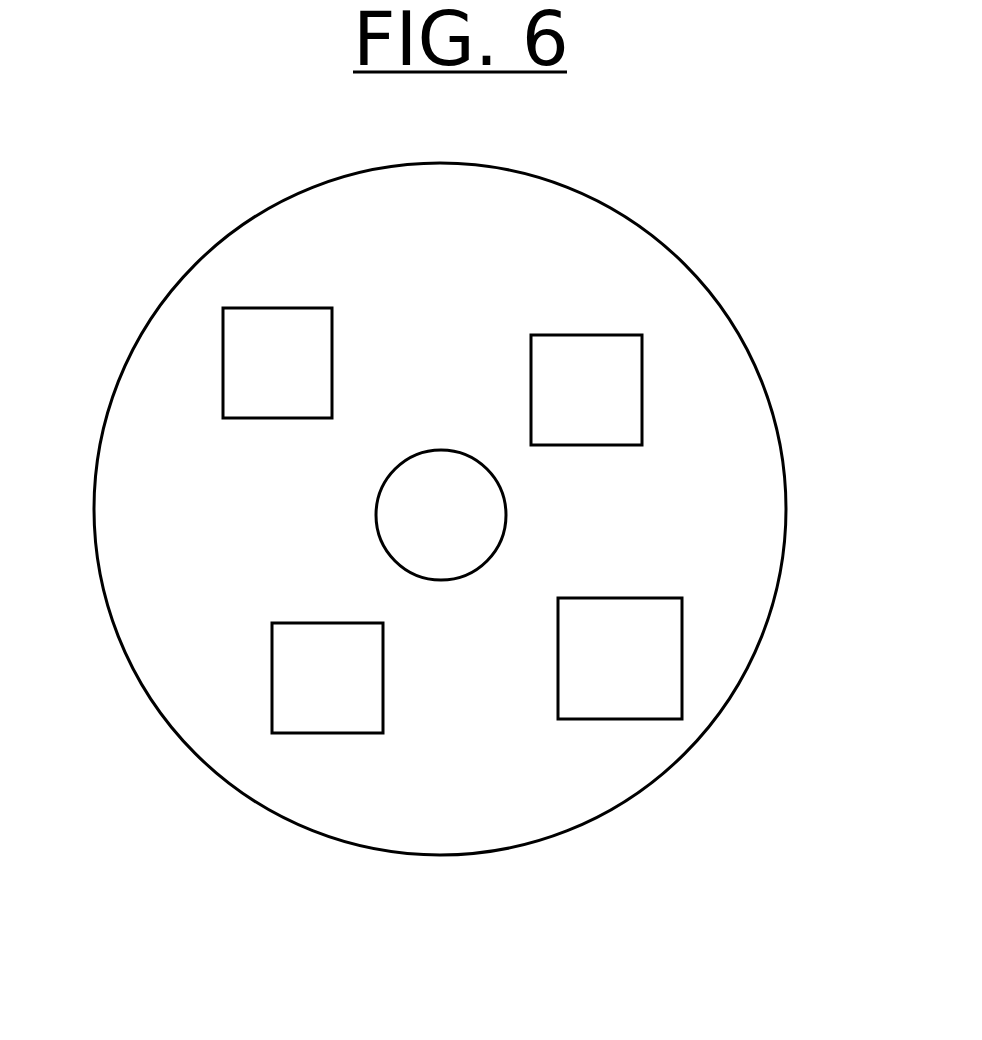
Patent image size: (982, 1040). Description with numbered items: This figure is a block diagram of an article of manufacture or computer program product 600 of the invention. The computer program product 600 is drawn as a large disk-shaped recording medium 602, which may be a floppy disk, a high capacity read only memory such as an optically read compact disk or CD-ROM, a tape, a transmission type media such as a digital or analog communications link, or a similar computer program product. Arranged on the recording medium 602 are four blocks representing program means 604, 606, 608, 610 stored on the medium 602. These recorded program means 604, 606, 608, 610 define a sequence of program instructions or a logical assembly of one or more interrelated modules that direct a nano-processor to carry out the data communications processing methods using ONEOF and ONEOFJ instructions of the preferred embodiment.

The computer program product 600 is at (456, 509).
The recording medium 602 is at (150, 307).
The program means 604 is at (586, 390).
The program means 606 is at (620, 658).
The program means 608 is at (327, 678).
The program means 610 is at (277, 363).